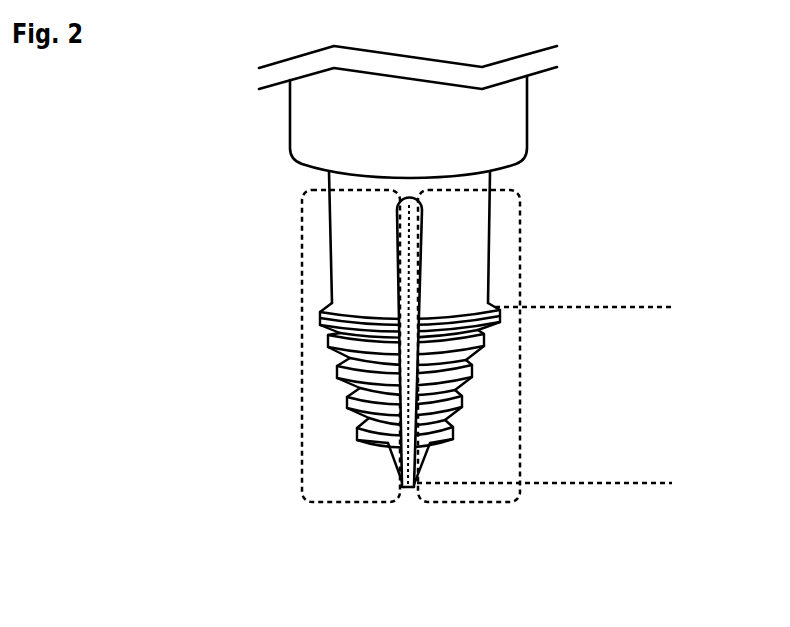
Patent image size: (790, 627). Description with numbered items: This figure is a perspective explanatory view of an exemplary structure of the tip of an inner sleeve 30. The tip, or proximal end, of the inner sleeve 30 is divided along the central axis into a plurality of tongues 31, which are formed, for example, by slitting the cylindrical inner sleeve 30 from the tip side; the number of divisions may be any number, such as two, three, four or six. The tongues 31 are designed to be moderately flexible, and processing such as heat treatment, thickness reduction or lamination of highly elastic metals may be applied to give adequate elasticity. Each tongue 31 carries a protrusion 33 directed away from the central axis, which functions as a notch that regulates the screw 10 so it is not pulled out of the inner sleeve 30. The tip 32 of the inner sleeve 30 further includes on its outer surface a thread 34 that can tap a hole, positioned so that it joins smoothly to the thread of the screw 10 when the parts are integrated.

The screw 10 is at (528, 127).
The inner sleeve 30 is at (490, 258).
The tongues 31 is at (350, 502).
The tip 32 is at (685, 306).
The protrusion 33 is at (500, 318).
The thread 34 is at (455, 440).